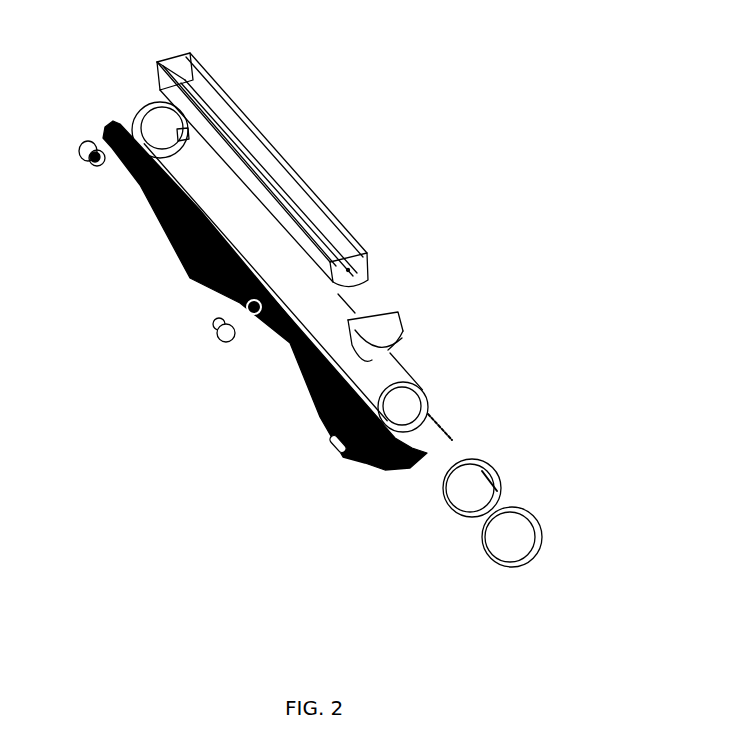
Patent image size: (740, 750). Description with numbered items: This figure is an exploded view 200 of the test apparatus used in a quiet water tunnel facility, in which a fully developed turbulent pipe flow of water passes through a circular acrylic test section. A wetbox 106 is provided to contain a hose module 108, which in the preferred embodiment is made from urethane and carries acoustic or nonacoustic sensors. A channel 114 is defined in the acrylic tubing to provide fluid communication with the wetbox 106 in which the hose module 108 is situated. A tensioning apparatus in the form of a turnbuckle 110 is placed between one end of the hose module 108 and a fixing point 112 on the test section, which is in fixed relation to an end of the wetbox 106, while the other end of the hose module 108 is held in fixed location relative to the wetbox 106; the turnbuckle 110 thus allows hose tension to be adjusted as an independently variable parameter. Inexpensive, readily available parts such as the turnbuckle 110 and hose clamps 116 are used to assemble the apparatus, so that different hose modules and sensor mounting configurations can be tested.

The exploded view 200 is at (484, 157).
The wetbox 106 is at (297, 125).
The hose module 108 is at (155, 225).
The turnbuckle 110 is at (327, 461).
The fixing point 112 is at (430, 319).
The channel 114 is at (353, 305).
The hose clamps 116 is at (457, 552).